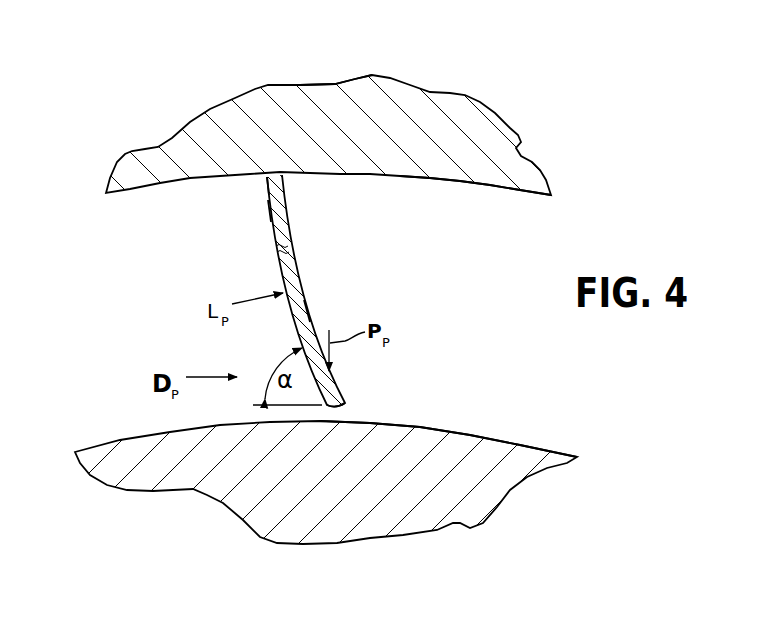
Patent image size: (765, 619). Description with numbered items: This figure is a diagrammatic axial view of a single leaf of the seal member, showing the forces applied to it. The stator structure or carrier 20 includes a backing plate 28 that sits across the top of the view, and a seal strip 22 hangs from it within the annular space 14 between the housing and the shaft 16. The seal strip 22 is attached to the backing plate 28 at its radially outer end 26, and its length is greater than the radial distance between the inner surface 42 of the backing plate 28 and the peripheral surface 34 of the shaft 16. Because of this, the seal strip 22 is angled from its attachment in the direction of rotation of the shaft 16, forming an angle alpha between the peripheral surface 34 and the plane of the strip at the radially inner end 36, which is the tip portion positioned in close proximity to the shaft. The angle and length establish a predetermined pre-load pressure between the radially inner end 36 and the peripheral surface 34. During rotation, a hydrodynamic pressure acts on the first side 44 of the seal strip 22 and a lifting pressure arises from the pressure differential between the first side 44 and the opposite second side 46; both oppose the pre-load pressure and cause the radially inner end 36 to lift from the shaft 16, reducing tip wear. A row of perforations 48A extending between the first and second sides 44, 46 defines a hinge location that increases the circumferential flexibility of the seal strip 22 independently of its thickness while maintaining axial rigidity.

The annular space 14 is at (382, 309).
The shaft 16 is at (382, 309).
The carrier 20 is at (382, 309).
The seal strip 22 is at (382, 309).
The radially outer end 26 is at (267, 185).
The backing plate 28 is at (280, 96).
The peripheral surface 34 is at (495, 432).
The radially inner end 36 is at (347, 410).
The inner surface 42 is at (457, 182).
The first side 44 is at (268, 210).
The second side 46 is at (310, 313).
The perforations 48A is at (285, 253).